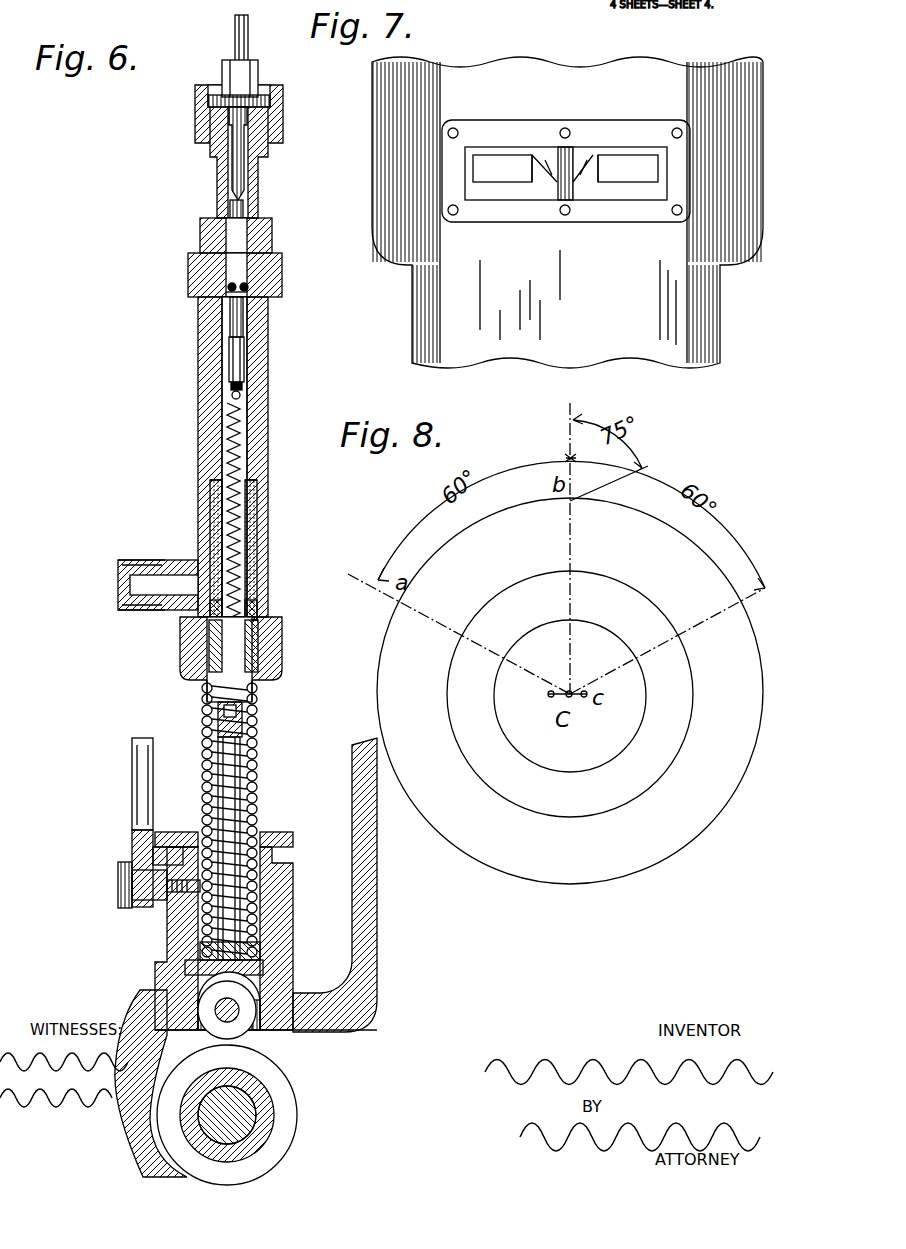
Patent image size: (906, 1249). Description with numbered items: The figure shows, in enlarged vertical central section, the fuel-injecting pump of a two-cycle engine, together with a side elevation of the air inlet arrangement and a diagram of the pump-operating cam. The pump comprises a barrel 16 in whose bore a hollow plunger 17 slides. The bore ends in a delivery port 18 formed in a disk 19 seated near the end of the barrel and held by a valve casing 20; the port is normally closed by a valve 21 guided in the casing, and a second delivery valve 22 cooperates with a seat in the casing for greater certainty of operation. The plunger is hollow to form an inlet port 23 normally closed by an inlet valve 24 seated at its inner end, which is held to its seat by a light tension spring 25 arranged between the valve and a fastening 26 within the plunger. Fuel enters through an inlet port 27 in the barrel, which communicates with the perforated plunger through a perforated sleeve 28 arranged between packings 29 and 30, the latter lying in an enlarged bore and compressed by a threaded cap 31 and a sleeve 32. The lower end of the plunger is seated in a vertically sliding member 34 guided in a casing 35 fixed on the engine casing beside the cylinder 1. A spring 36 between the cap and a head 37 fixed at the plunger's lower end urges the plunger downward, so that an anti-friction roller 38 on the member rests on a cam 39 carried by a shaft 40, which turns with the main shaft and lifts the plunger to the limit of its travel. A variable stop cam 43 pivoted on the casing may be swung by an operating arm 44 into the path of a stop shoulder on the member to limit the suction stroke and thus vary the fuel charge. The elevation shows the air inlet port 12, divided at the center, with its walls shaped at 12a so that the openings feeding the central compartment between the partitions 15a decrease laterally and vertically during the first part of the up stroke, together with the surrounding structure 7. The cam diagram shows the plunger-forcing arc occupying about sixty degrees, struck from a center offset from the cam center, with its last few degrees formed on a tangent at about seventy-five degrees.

In FIG. 7, the cylinder 1 is at (705, 305).
In FIG. 7, the cover plate 7 is at (440, 77).
In FIG. 7, the air inlet port 12 is at (483, 160).
In FIG. 7, the shaped walls of air inlet port 12a is at (570, 175).
In FIG. 7, the partitions 15a is at (590, 170).
In FIG. 6, the barrel 16 is at (268, 375).
In FIG. 6, the hollow plunger 17 is at (250, 410).
In FIG. 6, the delivery port 18 is at (258, 287).
In FIG. 6, the disk 19 is at (263, 290).
In FIG. 6, the valve casing 20 is at (247, 217).
In FIG. 6, the valve 21 is at (273, 233).
In FIG. 6, the second delivery valve 22 is at (258, 170).
In FIG. 6, the inlet port 23 is at (228, 400).
In FIG. 6, the inlet valve 24 is at (223, 308).
In FIG. 6, the light tension spring 25 is at (227, 440).
In FIG. 6, the fastening 26 is at (243, 707).
In FIG. 6, the inlet port 27 is at (162, 582).
In FIG. 6, the perforated sleeve 28 is at (252, 558).
In FIG. 6, the packing 29 is at (252, 612).
In FIG. 6, the packing 30 is at (250, 510).
In FIG. 6, the threaded cap 31 is at (263, 655).
In FIG. 6, the sleeve 32 is at (210, 643).
In FIG. 6, the vertically sliding member 34 is at (280, 832).
In FIG. 6, the casing 35 is at (290, 893).
In FIG. 6, the spring 36 is at (257, 767).
In FIG. 6, the head 37 is at (255, 952).
In FIG. 6, the anti-friction roller 38 is at (243, 1025).
In FIG. 6, the cam 39 is at (272, 1078).
In FIG. 8, the cam 39 is at (513, 858).
In FIG. 6, the shaft 40 is at (227, 1120).
In FIG. 6, the cam 43 is at (152, 920).
In FIG. 6, the operating arm 44 is at (140, 785).